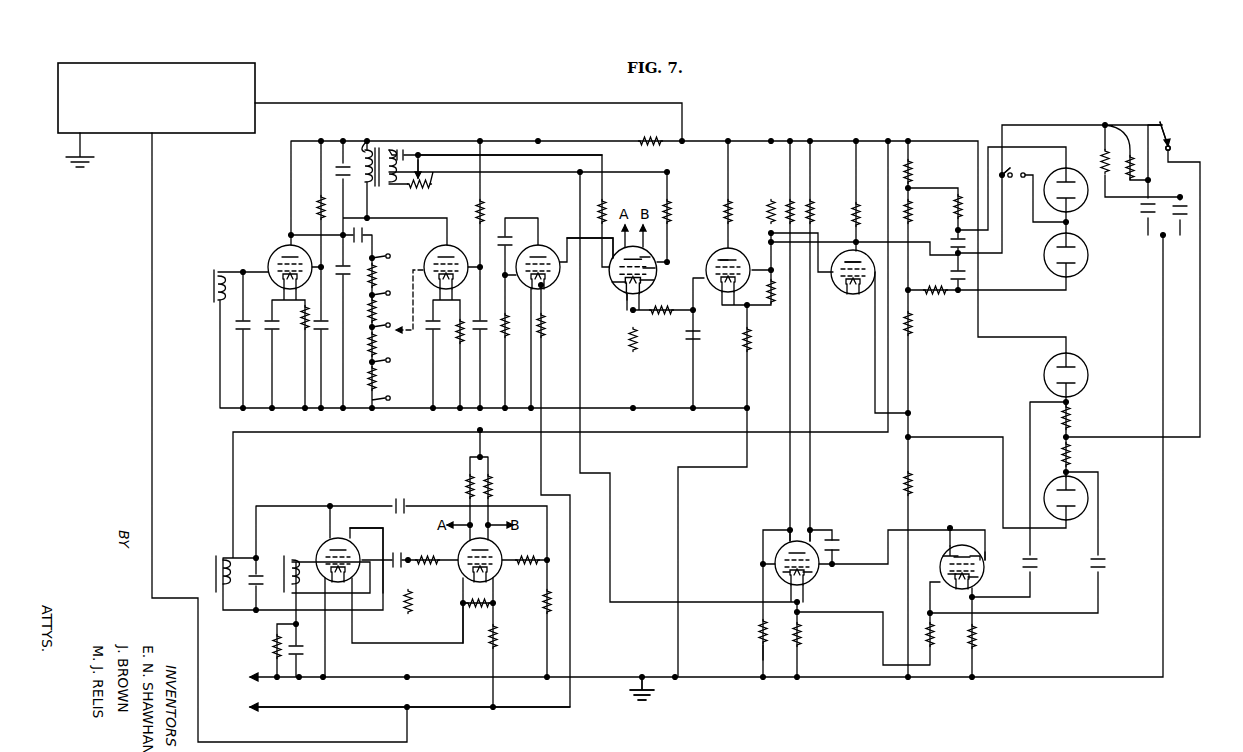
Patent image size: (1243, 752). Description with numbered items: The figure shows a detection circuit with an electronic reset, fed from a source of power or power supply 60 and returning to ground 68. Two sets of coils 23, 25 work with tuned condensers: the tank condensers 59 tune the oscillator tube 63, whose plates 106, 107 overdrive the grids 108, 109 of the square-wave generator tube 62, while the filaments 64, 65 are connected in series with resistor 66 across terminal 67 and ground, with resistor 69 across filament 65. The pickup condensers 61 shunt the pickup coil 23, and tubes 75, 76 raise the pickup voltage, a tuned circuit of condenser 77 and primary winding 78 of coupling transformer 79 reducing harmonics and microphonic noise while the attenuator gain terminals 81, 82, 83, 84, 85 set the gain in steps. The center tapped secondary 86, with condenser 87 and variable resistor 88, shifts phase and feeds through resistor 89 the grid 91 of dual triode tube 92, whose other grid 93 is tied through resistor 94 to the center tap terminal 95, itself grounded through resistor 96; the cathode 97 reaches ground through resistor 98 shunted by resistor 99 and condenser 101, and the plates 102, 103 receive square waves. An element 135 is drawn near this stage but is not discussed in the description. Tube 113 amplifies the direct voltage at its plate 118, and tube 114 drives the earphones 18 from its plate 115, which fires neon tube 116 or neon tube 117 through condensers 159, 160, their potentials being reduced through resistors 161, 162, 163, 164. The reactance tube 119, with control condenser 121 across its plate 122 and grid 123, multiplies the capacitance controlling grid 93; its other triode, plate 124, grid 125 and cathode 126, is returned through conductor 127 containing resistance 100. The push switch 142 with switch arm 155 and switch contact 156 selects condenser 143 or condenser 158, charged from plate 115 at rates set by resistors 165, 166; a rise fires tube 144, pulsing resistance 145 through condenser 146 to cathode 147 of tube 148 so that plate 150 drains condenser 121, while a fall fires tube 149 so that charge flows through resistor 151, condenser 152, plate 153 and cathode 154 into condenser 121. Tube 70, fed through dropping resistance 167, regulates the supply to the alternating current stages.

The source of power or power supply 60 is at (226, 64).
The pickup coil 23 is at (212, 286).
The pickup circuit condensers 61 is at (240, 328).
The amplifier tube 75 is at (275, 252).
The condenser 77 is at (340, 170).
The primary winding 78 is at (366, 146).
The coupling transformer 79 is at (379, 193).
The center tap terminal 95 is at (391, 150).
The condenser 87 is at (416, 153).
The center tapped secondary 86 is at (421, 180).
The variable resistor 88 is at (426, 188).
The attenuator gain terminal 81 is at (376, 237).
The attenuator gain terminal 82 is at (382, 276).
The attenuator gain terminal 83 is at (381, 311).
The attenuator gain terminal 84 is at (382, 345).
The attenuator gain terminal 85 is at (386, 379).
The amplifier tube 76 is at (440, 250).
The regulating tube 70 is at (561, 276).
The plate 102 is at (613, 240).
The resistor 89 is at (605, 212).
The resistor 94 is at (669, 210).
The plate 103 is at (652, 257).
The grid 93 is at (657, 268).
The dual triode tube 92 is at (655, 281).
The grid 91 is at (613, 281).
The cathode 97 is at (620, 296).
The resistor 99 is at (661, 321).
The resistor 98 is at (637, 342).
The condenser 101 is at (697, 335).
The resistor 135 is at (750, 335).
The plate 118 is at (722, 249).
The direct current amplifier tube 113 is at (746, 250).
The output tube 114 is at (832, 256).
The plate 115 is at (866, 260).
The resistor 164 is at (912, 174).
The resistor 163 is at (960, 208).
The resistor 162 is at (909, 220).
The condenser 159 is at (951, 243).
The condenser 160 is at (951, 275).
The resistor 161 is at (936, 293).
The earphones 18 is at (1012, 172).
The neon tube 116 is at (1088, 205).
The neon tube 117 is at (1088, 262).
The resistor 165 is at (1102, 152).
The resistor 166 is at (1127, 150).
The switch contact 156 is at (1152, 124).
The push switch 142 is at (1164, 122).
The switch arm 155 is at (1192, 148).
The condenser 158 is at (1147, 218).
The condenser 143 is at (1182, 212).
The tube 149 is at (1080, 368).
The resistor 151 is at (1070, 425).
The resistance 145 is at (1072, 462).
The tube 144 is at (1089, 494).
The condenser 152 is at (1032, 567).
The condenser 146 is at (1100, 567).
The tube 148 is at (948, 546).
The cathode 154 is at (982, 550).
The plate 150 is at (945, 563).
The cathode 147 is at (944, 578).
The plate 153 is at (976, 578).
The plate 124 is at (785, 532).
The plate 122 is at (811, 532).
The control condenser 121 is at (836, 538).
The grid 123 is at (836, 550).
The grid 125 is at (779, 565).
The cathode 126 is at (788, 573).
The reactance tube 119 is at (809, 575).
The resistance 100 is at (760, 620).
The resistor 96 is at (800, 636).
The conductor 127 is at (760, 656).
The ground 68 is at (645, 689).
The coil 25 is at (215, 579).
The tank circuit condensers 59 is at (256, 569).
The oscillator tube 63 is at (322, 556).
The plate 106 is at (333, 542).
The plate 107 is at (350, 546).
The filament 64 is at (337, 584).
The grid 108 is at (462, 556).
The square-wave generator tube 62 is at (492, 549).
The grid 109 is at (497, 561).
The filament 65 is at (479, 595).
The resistor 69 is at (476, 623).
The resistor 66 is at (495, 639).
The terminal 67 is at (521, 712).
The dropping resistance 167 is at (652, 146).